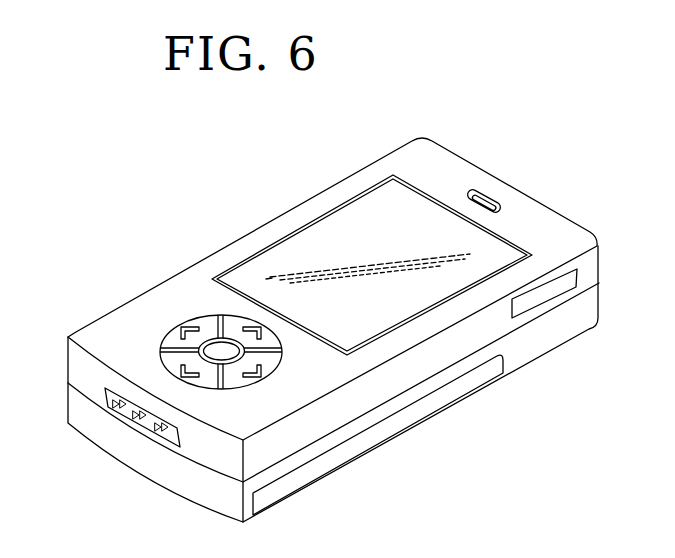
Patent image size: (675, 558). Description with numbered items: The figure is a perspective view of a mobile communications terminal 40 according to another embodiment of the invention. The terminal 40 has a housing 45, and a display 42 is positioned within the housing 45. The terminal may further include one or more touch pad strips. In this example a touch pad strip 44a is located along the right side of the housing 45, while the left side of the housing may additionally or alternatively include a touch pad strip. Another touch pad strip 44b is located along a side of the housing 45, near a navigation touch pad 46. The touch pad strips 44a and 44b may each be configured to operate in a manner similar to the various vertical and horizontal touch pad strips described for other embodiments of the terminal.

The terminal 40 is at (473, 402).
The display 42 is at (315, 252).
The touch pad strip 44a is at (533, 298).
The touch pad strip 44b is at (148, 427).
The housing 45 is at (307, 428).
The navigation touch pad 46 is at (200, 322).